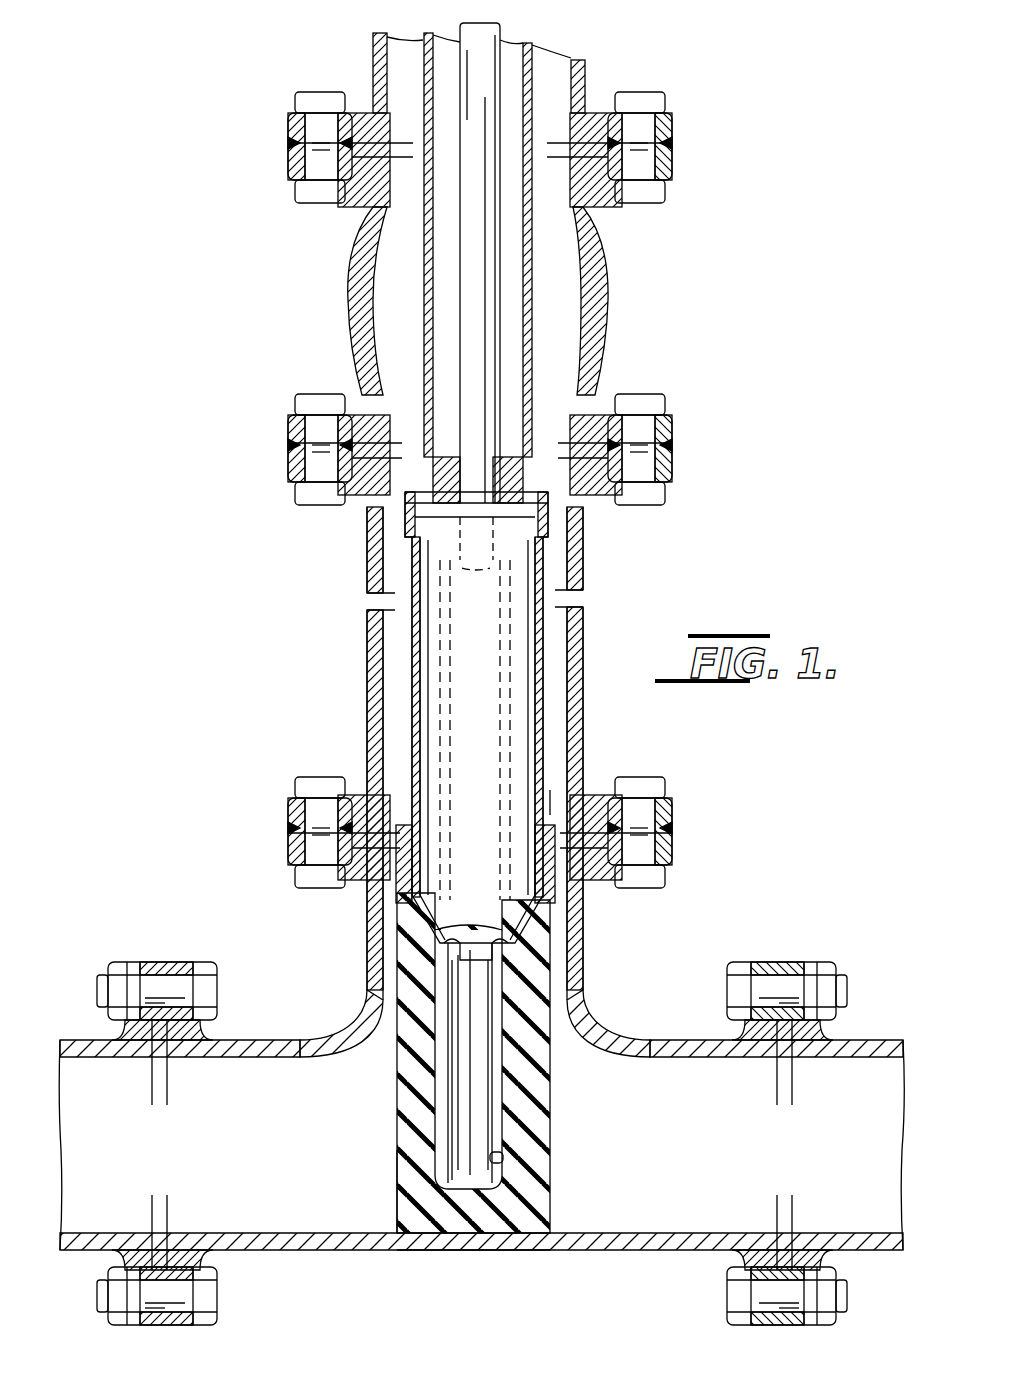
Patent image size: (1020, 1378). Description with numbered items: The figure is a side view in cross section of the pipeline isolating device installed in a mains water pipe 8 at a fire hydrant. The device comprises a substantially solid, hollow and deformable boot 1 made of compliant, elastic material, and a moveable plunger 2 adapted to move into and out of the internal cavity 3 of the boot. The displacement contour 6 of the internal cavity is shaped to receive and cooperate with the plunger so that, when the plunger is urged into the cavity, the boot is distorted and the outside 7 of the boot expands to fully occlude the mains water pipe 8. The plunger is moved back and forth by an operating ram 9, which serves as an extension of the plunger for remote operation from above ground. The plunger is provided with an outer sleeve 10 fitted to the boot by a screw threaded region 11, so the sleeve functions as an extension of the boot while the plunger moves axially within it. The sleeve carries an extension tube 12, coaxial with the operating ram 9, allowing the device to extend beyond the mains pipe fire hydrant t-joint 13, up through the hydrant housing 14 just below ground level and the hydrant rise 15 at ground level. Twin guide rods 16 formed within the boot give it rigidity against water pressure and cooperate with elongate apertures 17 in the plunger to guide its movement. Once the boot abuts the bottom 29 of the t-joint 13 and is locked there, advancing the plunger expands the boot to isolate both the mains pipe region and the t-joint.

The boot 1 is at (548, 1110).
The plunger 2 is at (450, 652).
The internal cavity 3 is at (437, 1060).
The displacement contour 6 is at (503, 1158).
The outside of the boot 7 is at (397, 1190).
The mains water pipe 8 is at (610, 1037).
The operating ram 9 is at (467, 256).
The outer sleeve 10 is at (413, 710).
The screw threaded region 11 is at (553, 808).
The extension tube 12 is at (532, 298).
The fire hydrant t-joint 13 is at (300, 1025).
The hydrant housing 14 is at (352, 318).
The hydrant rise 15 is at (373, 50).
The guide rods 16 is at (490, 1130).
The elongate apertures 17 is at (560, 932).
The bottom of the t-joint 29 is at (475, 1237).